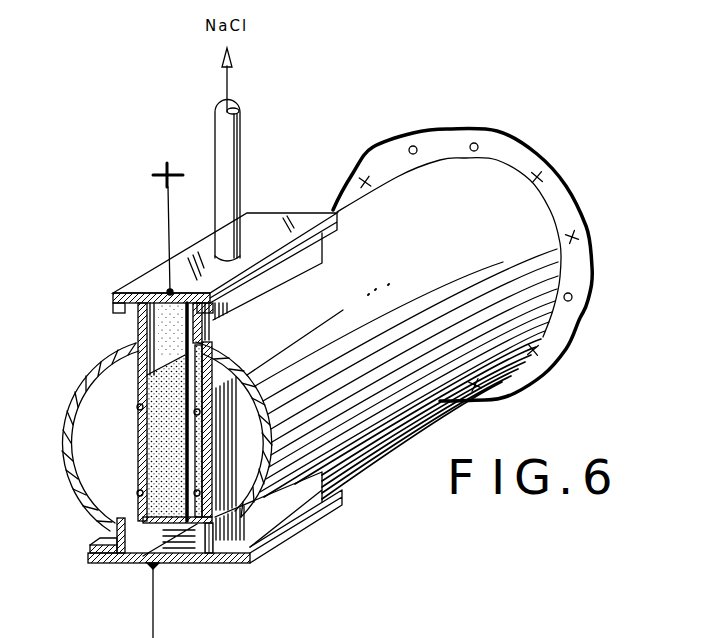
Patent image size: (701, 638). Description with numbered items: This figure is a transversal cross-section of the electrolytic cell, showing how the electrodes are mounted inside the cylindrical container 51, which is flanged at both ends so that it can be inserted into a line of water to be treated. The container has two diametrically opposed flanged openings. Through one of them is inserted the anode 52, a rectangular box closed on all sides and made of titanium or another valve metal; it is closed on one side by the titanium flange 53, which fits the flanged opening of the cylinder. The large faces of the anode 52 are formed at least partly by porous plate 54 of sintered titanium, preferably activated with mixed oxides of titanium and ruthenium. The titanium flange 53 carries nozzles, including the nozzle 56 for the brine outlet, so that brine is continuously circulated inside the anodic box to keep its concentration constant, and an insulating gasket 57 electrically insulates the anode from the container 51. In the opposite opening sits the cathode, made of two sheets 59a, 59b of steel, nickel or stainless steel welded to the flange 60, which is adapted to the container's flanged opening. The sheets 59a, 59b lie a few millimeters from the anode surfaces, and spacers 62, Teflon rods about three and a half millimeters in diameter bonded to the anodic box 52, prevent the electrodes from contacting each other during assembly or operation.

The cylindrical container 51 is at (68, 476).
The anode 52 is at (174, 525).
The titanium flange 53 is at (272, 224).
The porous plate 54 is at (190, 442).
The nozzle 56 is at (240, 131).
The insulating gasket 57 is at (120, 303).
The cathode sheet 59a is at (191, 556).
The cathode sheet 59b is at (148, 558).
The flange 60 is at (243, 567).
The spacers 62 is at (138, 409).